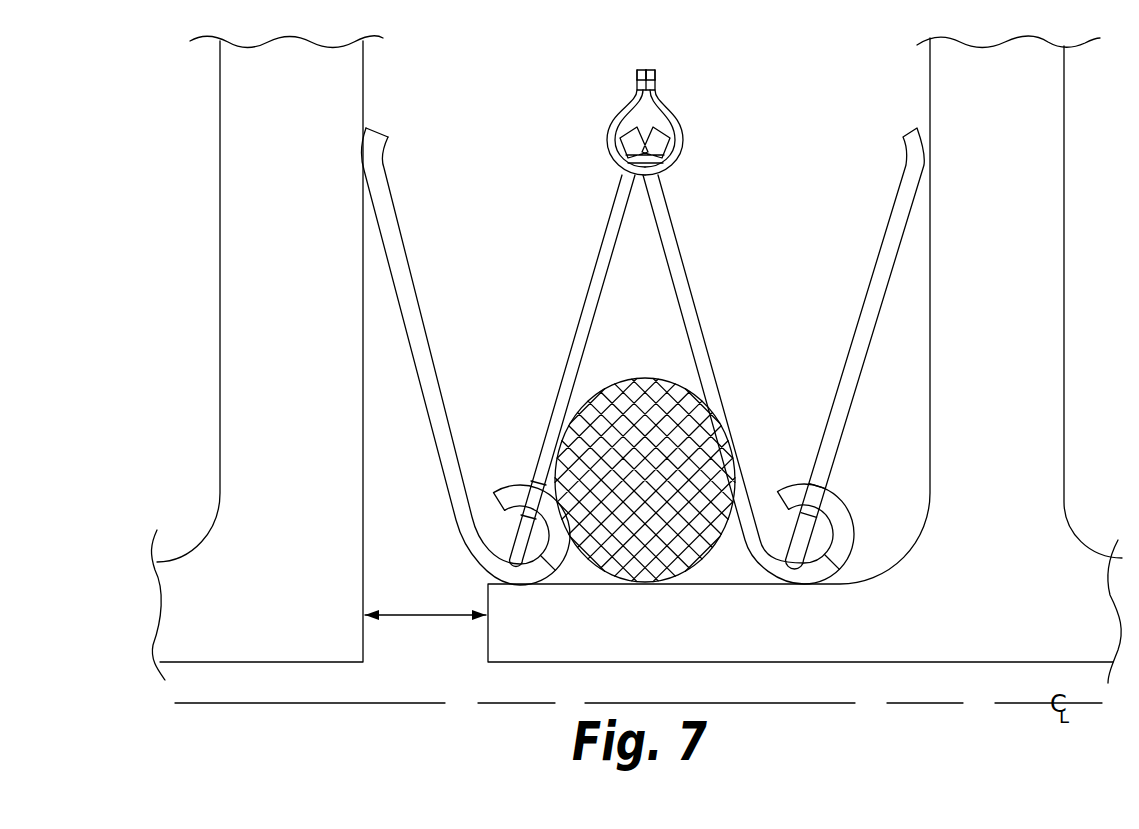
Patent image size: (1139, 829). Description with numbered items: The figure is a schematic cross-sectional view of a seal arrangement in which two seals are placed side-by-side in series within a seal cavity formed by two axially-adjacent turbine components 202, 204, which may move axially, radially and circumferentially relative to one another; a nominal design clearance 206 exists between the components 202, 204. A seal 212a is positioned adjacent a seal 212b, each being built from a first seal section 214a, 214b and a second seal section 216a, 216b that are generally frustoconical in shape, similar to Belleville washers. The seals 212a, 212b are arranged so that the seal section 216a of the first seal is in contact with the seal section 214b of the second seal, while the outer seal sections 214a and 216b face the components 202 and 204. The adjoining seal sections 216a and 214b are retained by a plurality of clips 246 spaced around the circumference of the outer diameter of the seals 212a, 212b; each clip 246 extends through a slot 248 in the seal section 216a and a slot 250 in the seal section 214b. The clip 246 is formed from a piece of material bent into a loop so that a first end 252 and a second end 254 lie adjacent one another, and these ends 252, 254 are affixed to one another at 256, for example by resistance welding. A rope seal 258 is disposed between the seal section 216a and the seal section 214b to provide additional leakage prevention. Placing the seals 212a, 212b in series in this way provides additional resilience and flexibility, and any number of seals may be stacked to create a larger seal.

The turbine component 202 is at (243, 665).
The turbine component 204 is at (917, 663).
The nominal design clearance 206 is at (423, 617).
The seal 212a is at (498, 356).
The seal 212b is at (783, 356).
The first seal section 214a is at (440, 367).
The first seal section 214b is at (724, 365).
The second seal section 216a is at (554, 367).
The second seal section 216b is at (839, 367).
The clip 246 is at (716, 104).
The slot 248 is at (690, 172).
The slot 250 is at (601, 172).
The first end 252 is at (637, 73).
The second end 254 is at (656, 72).
The affixing location 256 is at (668, 77).
The rope seal 258 is at (712, 553).